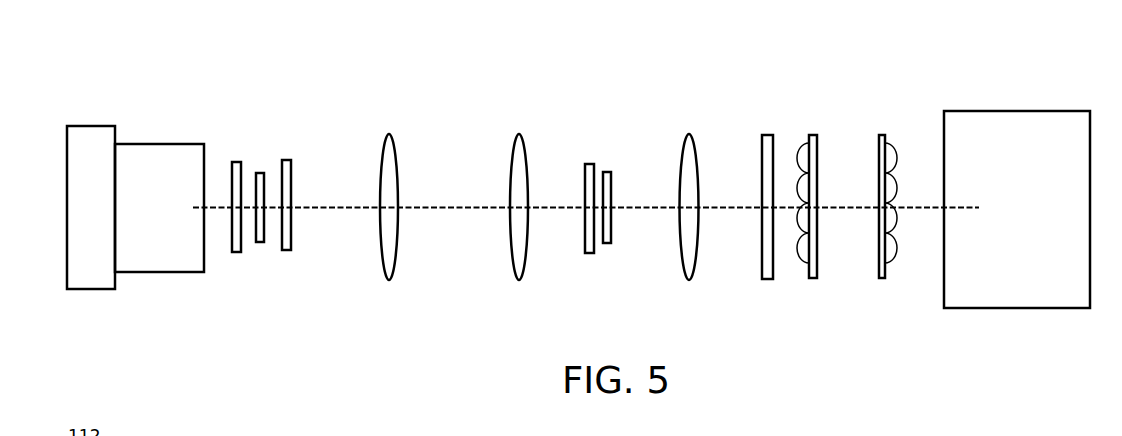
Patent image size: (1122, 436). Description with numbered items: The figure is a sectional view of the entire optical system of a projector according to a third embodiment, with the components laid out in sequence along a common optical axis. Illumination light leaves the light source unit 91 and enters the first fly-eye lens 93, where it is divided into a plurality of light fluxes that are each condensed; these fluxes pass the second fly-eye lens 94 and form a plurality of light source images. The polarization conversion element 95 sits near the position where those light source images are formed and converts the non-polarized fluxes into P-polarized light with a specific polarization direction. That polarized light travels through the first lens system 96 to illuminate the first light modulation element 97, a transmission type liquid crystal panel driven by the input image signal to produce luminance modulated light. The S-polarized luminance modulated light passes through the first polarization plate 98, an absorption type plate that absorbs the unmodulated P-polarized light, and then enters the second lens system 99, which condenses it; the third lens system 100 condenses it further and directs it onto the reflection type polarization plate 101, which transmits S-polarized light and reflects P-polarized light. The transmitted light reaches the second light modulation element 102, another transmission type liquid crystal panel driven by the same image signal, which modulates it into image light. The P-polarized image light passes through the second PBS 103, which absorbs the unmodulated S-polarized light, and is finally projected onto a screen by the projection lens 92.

The light source unit 91 is at (1057, 123).
The projection lens 92 is at (163, 153).
The first fly-eye lens 93 is at (887, 140).
The second fly-eye lens 94 is at (817, 137).
The polarization conversion element 95 is at (773, 137).
The first lens system 96 is at (688, 148).
The first light modulation element 97 is at (610, 173).
The first polarization plate 98 is at (585, 163).
The second lens system 99 is at (522, 257).
The third lens system 100 is at (390, 247).
The reflection type polarization plate 101 is at (287, 243).
The second light modulation element 102 is at (260, 190).
The second PBS 103 is at (240, 168).